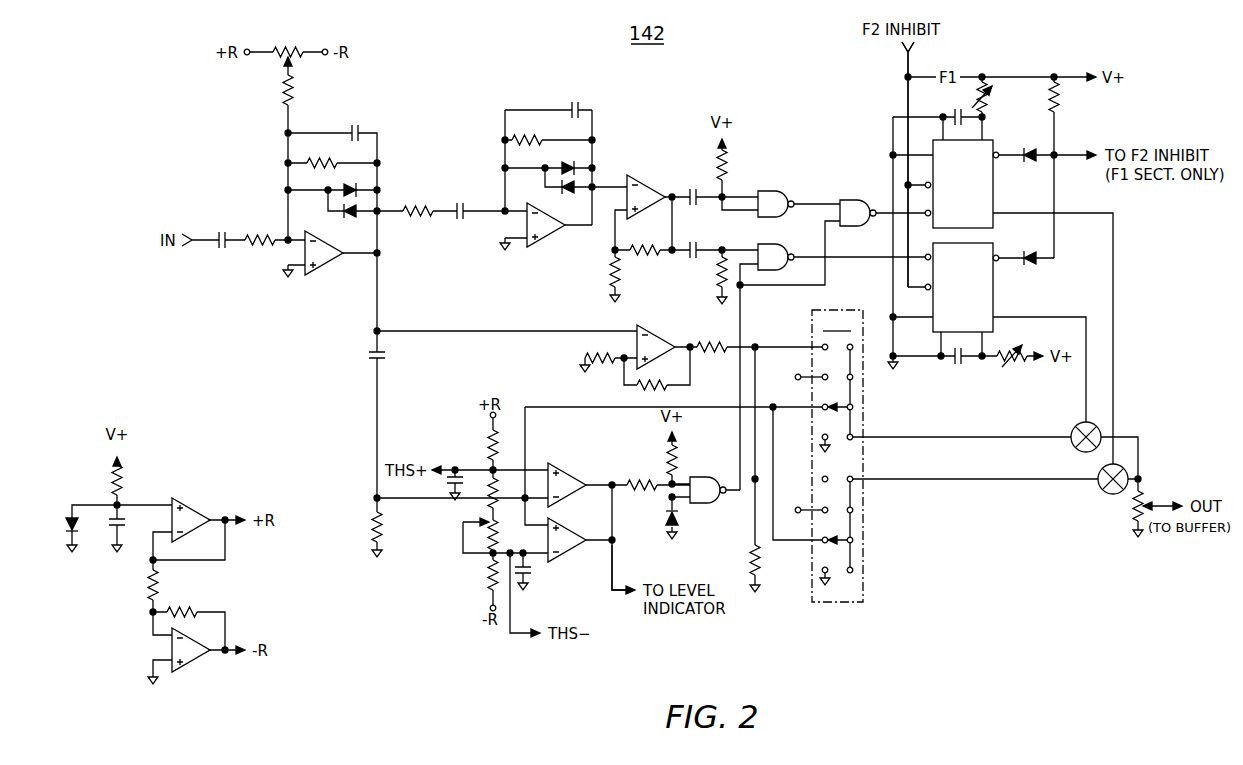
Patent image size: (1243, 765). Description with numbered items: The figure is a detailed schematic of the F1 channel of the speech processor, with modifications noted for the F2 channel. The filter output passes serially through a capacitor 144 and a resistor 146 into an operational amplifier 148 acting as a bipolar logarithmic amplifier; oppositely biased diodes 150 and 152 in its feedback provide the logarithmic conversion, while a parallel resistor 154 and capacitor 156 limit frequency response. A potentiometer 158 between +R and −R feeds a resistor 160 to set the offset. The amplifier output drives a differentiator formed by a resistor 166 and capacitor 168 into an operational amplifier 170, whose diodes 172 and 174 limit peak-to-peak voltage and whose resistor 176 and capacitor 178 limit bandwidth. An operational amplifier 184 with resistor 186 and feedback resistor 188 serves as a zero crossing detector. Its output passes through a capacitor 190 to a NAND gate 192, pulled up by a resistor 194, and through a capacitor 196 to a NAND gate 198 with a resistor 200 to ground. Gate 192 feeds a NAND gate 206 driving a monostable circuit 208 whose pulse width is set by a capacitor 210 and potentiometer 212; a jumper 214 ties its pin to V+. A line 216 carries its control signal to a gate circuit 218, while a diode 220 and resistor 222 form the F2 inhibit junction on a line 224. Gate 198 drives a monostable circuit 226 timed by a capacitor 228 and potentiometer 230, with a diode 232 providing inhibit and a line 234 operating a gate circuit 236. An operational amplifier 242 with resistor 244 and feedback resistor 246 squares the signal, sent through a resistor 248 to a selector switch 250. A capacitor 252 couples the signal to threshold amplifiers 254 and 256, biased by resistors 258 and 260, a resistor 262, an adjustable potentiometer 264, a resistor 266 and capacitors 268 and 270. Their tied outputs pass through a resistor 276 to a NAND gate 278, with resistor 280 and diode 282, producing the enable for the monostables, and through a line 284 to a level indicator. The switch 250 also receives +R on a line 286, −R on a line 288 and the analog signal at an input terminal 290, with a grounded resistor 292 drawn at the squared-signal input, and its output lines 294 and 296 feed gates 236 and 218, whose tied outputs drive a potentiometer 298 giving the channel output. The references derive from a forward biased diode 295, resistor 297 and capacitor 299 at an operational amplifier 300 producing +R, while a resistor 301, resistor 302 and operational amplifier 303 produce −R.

The capacitor 144 is at (216, 232).
The resistor 146 is at (251, 233).
The operational amplifier 148 is at (322, 274).
The diode 150 is at (345, 187).
The diode 152 is at (348, 216).
The resistor 154 is at (327, 164).
The capacitor 156 is at (360, 130).
The potentiometer 158 is at (285, 50).
The resistor 160 is at (282, 90).
The resistor 166 is at (418, 206).
The capacitor 168 is at (462, 203).
The operational amplifier 170 is at (539, 247).
The diode 172 is at (559, 166).
The diode 174 is at (566, 195).
The resistor 176 is at (541, 139).
The capacitor 178 is at (568, 106).
The operational amplifier 184 is at (640, 177).
The resistor 186 is at (608, 280).
The feedback resistor 188 is at (637, 245).
The capacitor 190 is at (690, 189).
The NAND gate 192 is at (770, 192).
The resistor 194 is at (728, 165).
The capacitor 196 is at (695, 236).
The NAND gate 198 is at (770, 246).
The resistor 200 is at (715, 276).
The NAND gate 206 is at (840, 200).
The monostable circuit 208 is at (996, 204).
The capacitor 210 is at (951, 112).
The potentiometer 212 is at (988, 108).
The jumper 214 is at (912, 75).
The line 216 is at (1118, 218).
The gate circuit 218 is at (1100, 489).
The diode 220 is at (1037, 163).
The resistor 222 is at (1060, 98).
The line 224 is at (903, 57).
The monostable circuit 226 is at (996, 298).
The capacitor 228 is at (963, 365).
The potentiometer 230 is at (1018, 362).
The diode 232 is at (1040, 264).
The line 234 is at (1058, 316).
The gate circuit 236 is at (1071, 430).
The operational amplifier 242 is at (650, 330).
The resistor 244 is at (598, 352).
The feedback resistor 246 is at (650, 381).
The resistor 248 is at (705, 355).
The selector switch 250 is at (837, 456).
The capacitor 252 is at (371, 356).
The operational amplifier 254 is at (560, 470).
The operational amplifier 256 is at (565, 524).
The resistor 258 is at (489, 445).
The resistor 260 is at (487, 575).
The resistor 262 is at (488, 503).
The potentiometer 264 is at (497, 530).
The resistor 266 is at (373, 525).
The capacitor 268 is at (449, 482).
The capacitor 270 is at (531, 578).
The resistor 276 is at (643, 480).
The NAND gate 278 is at (696, 480).
The resistor 280 is at (682, 462).
The diode 282 is at (680, 520).
The line 284 is at (613, 584).
The line 286 is at (808, 385).
The line 288 is at (810, 515).
The input terminal 290 is at (795, 410).
The resistor 292 is at (762, 560).
The line 294 is at (870, 435).
The line 296 is at (870, 481).
The resistor 297 is at (125, 485).
The potentiometer 298 is at (1133, 515).
The capacitor 299 is at (110, 532).
The operational amplifier 300 is at (188, 508).
The resistor 301 is at (160, 582).
The resistor 302 is at (193, 608).
The operational amplifier 303 is at (195, 665).
The diode 295 is at (68, 512).